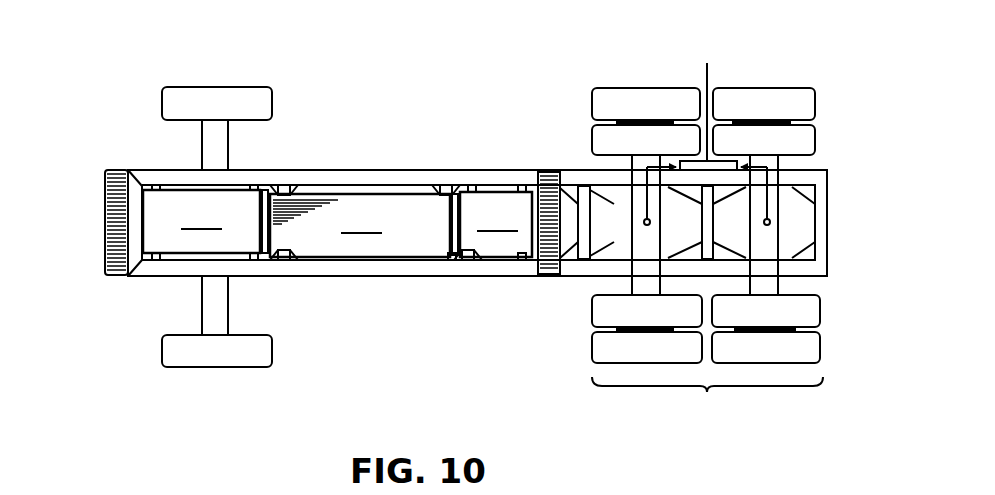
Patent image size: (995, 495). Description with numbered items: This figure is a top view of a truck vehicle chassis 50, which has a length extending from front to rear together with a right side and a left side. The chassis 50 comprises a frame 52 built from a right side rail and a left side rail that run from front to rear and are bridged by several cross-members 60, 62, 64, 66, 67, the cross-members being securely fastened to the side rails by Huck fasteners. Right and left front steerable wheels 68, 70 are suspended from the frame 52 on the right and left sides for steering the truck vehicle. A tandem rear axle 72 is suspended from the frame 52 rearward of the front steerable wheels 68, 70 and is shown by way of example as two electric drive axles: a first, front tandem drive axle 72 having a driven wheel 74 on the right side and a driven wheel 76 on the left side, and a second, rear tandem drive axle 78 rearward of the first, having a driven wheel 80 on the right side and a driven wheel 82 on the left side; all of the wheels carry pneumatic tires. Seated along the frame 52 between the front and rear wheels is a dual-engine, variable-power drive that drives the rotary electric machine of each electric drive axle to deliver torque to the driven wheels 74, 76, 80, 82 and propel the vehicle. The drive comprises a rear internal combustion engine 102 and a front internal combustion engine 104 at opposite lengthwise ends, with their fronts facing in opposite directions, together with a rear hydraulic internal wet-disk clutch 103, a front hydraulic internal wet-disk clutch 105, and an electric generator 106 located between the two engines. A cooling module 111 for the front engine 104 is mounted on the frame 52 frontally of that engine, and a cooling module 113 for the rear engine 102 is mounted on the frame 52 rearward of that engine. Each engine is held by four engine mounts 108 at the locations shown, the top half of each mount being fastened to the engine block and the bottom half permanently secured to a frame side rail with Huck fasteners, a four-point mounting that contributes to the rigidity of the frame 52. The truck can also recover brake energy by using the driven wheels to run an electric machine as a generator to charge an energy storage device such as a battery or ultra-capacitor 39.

The ultra-capacitor 39 is at (707, 75).
The truck vehicle chassis 50 is at (346, 126).
The frame 52 is at (359, 168).
The cross-member 60 is at (285, 185).
The cross-member 62 is at (445, 185).
The cross-member 64 is at (594, 228).
The cross-member 66 is at (718, 228).
The cross-member 67 is at (827, 229).
The right front steerable wheel 68 is at (225, 87).
The left front steerable wheel 70 is at (250, 368).
The tandem rear axle 72 is at (672, 204).
The driven wheel 74 is at (592, 141).
The driven wheel 76 is at (592, 345).
The second drive axle 78 is at (778, 228).
The driven wheel 80 is at (816, 101).
The driven wheel 82 is at (821, 313).
The rear internal combustion engine 102 is at (496, 224).
The rear hydraulic internal wet-disk clutch 103 is at (454, 262).
The front internal combustion engine 104 is at (201, 221).
The front hydraulic internal wet-disk clutch 105 is at (284, 250).
The electric generator 106 is at (360, 225).
The engine mounts 108 is at (160, 185).
The cooling module 111 is at (121, 276).
The cooling module 113 is at (548, 276).